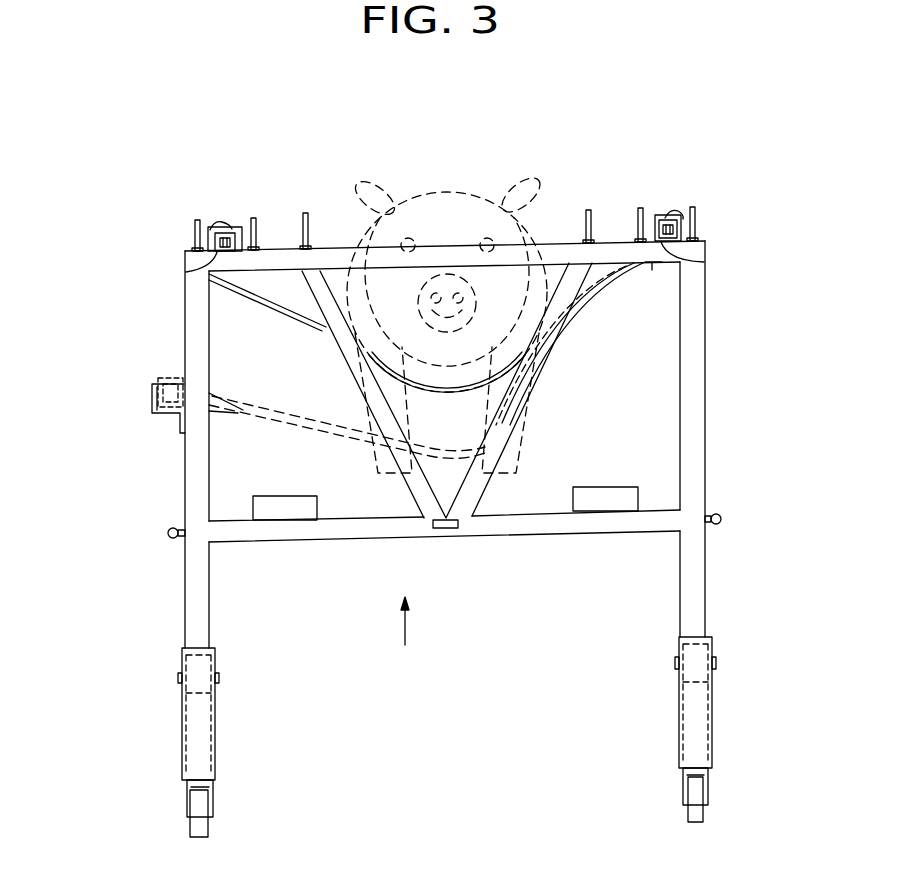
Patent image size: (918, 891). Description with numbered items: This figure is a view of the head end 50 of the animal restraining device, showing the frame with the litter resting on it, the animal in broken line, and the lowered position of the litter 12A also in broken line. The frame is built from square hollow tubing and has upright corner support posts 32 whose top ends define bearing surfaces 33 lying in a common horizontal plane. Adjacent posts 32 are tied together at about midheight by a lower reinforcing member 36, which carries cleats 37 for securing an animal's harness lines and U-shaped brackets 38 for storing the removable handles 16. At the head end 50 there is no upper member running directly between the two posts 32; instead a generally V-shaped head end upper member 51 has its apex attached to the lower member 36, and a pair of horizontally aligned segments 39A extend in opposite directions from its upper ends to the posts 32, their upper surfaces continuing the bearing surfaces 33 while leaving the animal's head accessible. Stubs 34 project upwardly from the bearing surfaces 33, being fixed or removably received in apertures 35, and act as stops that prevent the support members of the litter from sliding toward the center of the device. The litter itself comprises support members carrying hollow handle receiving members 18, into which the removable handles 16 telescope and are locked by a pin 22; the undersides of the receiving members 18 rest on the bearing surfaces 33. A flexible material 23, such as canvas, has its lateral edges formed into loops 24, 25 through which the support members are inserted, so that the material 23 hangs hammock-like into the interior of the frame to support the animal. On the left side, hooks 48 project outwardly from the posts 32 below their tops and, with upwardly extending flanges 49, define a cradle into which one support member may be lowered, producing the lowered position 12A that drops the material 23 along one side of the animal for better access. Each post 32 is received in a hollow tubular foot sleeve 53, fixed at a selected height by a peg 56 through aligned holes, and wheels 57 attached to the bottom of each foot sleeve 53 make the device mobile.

The lowered position of the litter 12A is at (292, 420).
The removably attached handles 16 is at (228, 254).
The hollow handle receiving members 18 is at (228, 224).
The pin 22 is at (218, 225).
The flexible material 23 is at (597, 290).
The loop 24 is at (238, 225).
The loop 25 is at (662, 215).
The upright corner support posts 32 is at (187, 597).
The bearing surfaces 33 is at (217, 256).
The stubs 34 is at (195, 220).
The apertures 35 is at (190, 248).
The lower reinforcing members 36 is at (512, 533).
The cleats 37 is at (162, 540).
The brackets 38 is at (290, 518).
The horizontally aligned segments 39A is at (220, 280).
The hooks 48 is at (153, 417).
The upwardly extending flanges 49 is at (152, 394).
The head end 50 is at (410, 644).
The head end upper member 51 is at (550, 340).
The foot sleeve 53 is at (217, 657).
The peg 56 is at (220, 682).
The wheels 57 is at (202, 825).